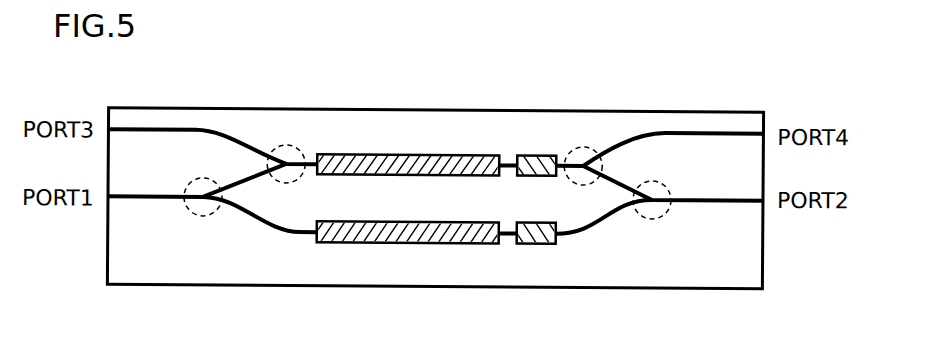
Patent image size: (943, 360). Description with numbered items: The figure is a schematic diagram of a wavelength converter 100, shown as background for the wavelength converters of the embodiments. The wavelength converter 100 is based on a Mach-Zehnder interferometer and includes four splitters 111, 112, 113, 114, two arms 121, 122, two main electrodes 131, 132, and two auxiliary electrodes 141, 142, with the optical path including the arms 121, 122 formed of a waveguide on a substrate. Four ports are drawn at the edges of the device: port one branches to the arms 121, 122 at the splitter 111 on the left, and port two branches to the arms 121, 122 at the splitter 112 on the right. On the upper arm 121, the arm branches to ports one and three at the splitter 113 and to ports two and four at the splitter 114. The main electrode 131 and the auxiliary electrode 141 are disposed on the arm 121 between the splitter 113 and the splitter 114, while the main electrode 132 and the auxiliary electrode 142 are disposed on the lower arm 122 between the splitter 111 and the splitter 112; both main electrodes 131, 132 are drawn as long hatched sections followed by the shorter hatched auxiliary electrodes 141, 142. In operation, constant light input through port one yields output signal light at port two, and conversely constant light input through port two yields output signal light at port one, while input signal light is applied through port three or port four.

The wavelength converter 100 is at (143, 110).
The splitter 111 is at (202, 218).
The splitter 112 is at (652, 218).
The splitter 113 is at (292, 145).
The splitter 114 is at (577, 146).
The arm 121 is at (245, 184).
The arm 122 is at (267, 224).
The main electrode 131 is at (407, 155).
The main electrode 132 is at (407, 243).
The auxiliary electrode 141 is at (538, 155).
The auxiliary electrode 142 is at (533, 243).